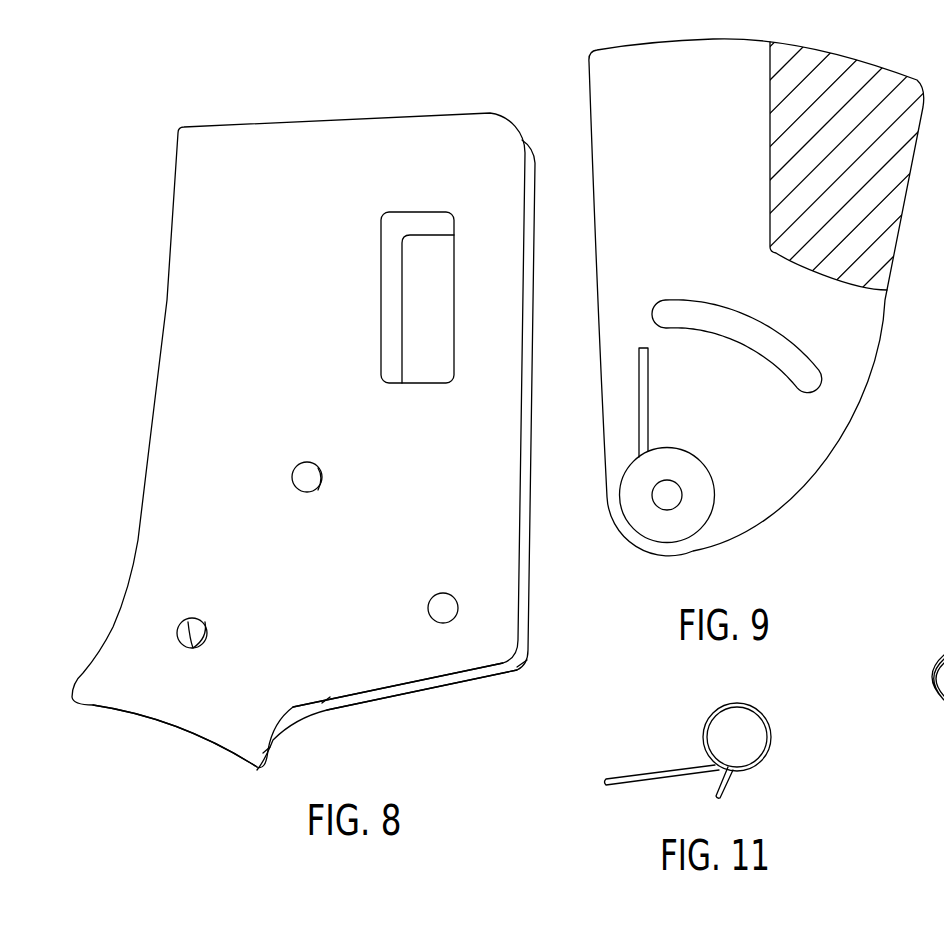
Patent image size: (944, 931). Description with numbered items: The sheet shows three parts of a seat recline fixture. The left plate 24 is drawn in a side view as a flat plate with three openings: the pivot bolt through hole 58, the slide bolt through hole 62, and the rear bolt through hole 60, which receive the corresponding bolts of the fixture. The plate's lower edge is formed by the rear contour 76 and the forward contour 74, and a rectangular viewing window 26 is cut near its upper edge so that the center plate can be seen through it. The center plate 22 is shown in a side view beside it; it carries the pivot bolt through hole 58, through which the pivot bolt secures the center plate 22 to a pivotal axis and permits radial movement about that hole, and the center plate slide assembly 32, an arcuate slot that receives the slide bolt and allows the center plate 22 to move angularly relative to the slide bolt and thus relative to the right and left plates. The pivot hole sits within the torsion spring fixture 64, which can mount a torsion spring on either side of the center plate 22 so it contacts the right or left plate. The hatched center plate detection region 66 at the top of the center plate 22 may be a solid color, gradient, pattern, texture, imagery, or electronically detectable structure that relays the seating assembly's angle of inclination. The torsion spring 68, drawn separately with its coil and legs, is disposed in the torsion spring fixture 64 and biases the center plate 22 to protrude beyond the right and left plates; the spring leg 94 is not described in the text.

In FIG. 9, the center plate 22 is at (612, 117).
In FIG. 8, the left plate 24 is at (317, 152).
In FIG. 8, the viewing window 26 is at (428, 240).
In FIG. 9, the center plate slide assembly 32 is at (703, 310).
In FIG. 8, the pivot bolt through hole 58 is at (188, 622).
In FIG. 9, the pivot bolt through hole 58 is at (664, 495).
In FIG. 8, the rear bolt through hole 60 is at (443, 605).
In FIG. 8, the slide bolt through hole 62 is at (305, 470).
In FIG. 9, the torsion spring fixture 64 is at (695, 483).
In FIG. 9, the center plate detection region 66 is at (908, 92).
In FIG. 11, the torsion spring 68 is at (770, 712).
In FIG. 8, the forward contour 74 is at (433, 683).
In FIG. 8, the rear contour 76 is at (168, 726).
In FIG. 11, the spring leg 94 is at (763, 768).